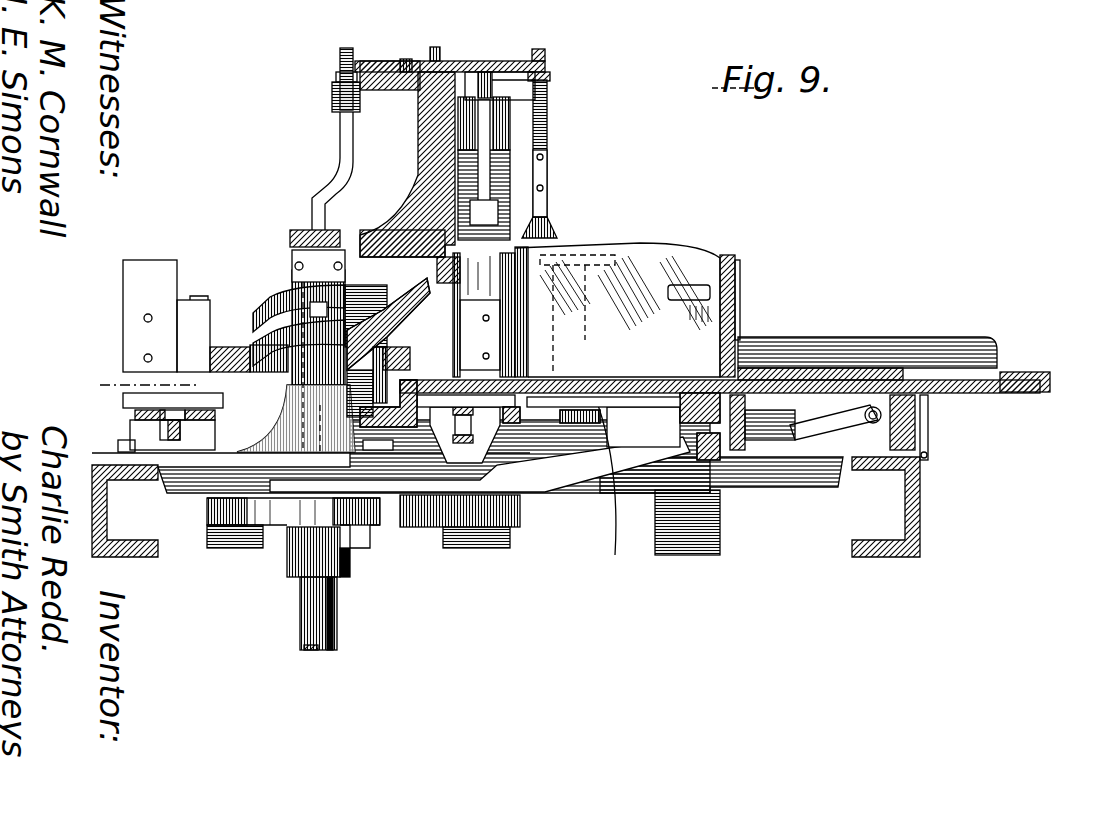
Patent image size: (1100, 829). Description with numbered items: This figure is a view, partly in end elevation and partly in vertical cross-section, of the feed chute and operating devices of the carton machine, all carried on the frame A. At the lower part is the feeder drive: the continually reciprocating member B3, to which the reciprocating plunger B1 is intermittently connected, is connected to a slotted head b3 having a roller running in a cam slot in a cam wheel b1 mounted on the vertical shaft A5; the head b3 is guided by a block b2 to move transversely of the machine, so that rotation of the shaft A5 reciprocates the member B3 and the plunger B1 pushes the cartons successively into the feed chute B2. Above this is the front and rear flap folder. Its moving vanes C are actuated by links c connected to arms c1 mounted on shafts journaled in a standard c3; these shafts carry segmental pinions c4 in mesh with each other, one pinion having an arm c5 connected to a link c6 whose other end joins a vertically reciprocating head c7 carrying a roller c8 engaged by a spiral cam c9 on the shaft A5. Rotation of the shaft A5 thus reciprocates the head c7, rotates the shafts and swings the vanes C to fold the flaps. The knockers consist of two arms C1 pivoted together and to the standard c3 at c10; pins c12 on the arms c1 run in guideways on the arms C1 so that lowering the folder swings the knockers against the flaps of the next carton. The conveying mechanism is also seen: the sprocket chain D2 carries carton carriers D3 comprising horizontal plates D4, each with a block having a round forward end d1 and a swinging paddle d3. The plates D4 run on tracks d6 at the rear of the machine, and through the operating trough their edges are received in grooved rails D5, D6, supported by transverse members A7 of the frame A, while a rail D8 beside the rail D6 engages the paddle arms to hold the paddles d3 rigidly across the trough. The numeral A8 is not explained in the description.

The frame A is at (920, 500).
The vertical shaft A5 is at (337, 612).
The transverse members A7 is at (616, 558).
The standard A8 is at (385, 240).
The reciprocating plunger B1 is at (736, 297).
The feed chute B2 is at (720, 318).
The reciprocating member B3 is at (805, 370).
The moving vanes C is at (522, 225).
The knocker arms C1 is at (548, 136).
The links c is at (510, 175).
The arms c1 is at (492, 95).
The standard c3 is at (432, 61).
The segmental pinions c4 is at (340, 68).
The arm c5 is at (332, 100).
The link c6 is at (340, 158).
The vertically-reciprocating head c7 is at (290, 244).
The roller c8 is at (258, 278).
The spiral cam c9 is at (258, 305).
The pivot c10 is at (552, 62).
The pins c12 is at (508, 60).
The sprocket chain D2 is at (130, 428).
The carton carriers D3 is at (123, 322).
The horizontal plates D4 is at (125, 394).
The rail D5 is at (555, 480).
The rail D6 is at (410, 490).
The rail D8 is at (334, 361).
The round forward end d1 is at (143, 384).
The paddle d3 is at (166, 316).
The tracks d6 is at (195, 440).
The cam wheel b1 is at (480, 525).
The block b2 is at (305, 470).
The slotted head b3 is at (440, 520).